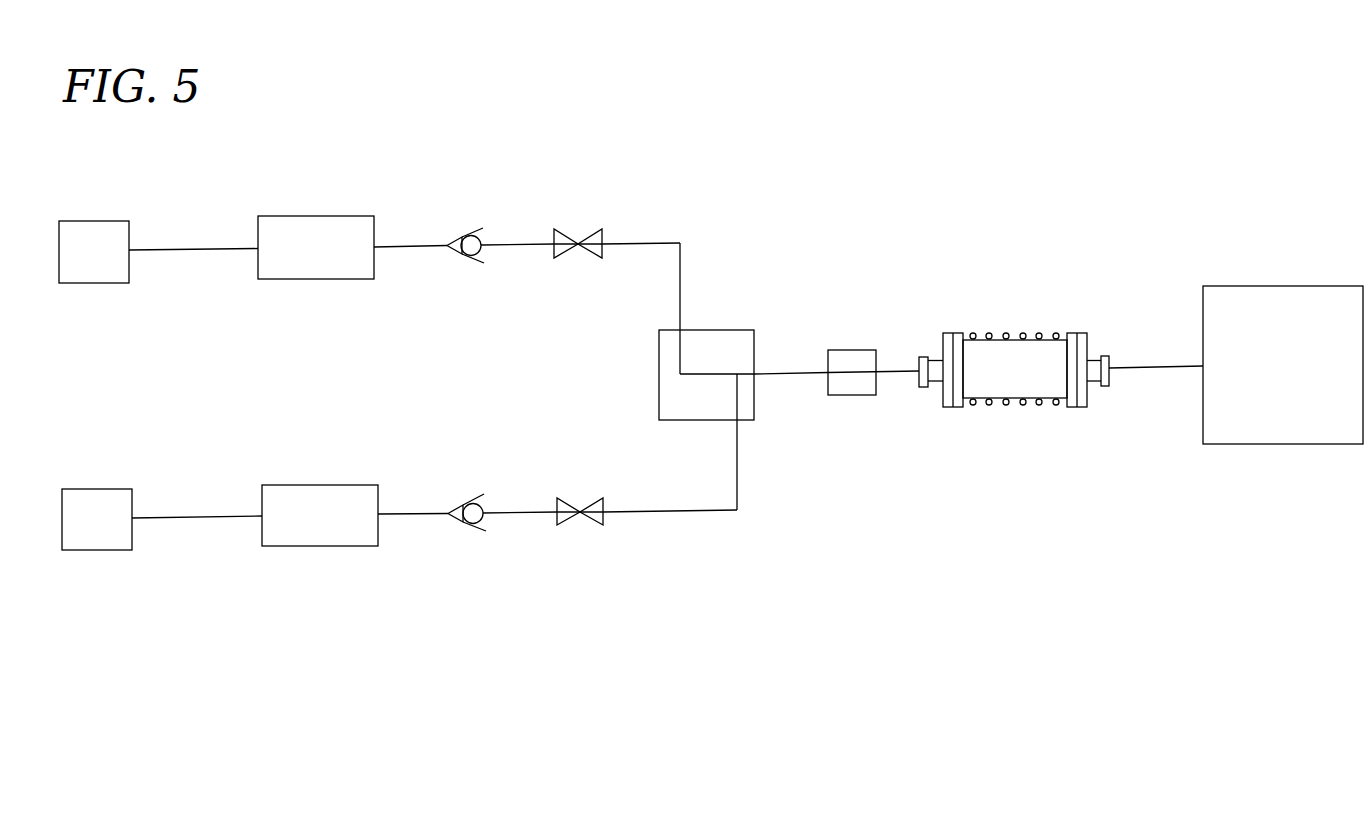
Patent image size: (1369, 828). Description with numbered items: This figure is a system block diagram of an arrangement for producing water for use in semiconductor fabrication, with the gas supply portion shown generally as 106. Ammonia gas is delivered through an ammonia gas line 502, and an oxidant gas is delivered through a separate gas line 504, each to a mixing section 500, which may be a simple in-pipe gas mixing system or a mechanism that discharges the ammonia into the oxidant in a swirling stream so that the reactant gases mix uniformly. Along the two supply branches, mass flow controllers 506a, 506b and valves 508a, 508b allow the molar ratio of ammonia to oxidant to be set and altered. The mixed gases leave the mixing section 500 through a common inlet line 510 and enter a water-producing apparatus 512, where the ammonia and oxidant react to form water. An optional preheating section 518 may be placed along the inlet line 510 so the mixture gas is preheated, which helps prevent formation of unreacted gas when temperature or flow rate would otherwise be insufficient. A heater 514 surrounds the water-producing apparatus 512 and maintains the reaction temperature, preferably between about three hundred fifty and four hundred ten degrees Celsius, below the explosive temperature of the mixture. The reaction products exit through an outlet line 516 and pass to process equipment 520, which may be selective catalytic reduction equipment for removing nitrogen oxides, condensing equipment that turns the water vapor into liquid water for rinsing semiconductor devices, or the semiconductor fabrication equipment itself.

The gas delivery system 106 is at (422, 332).
The mixing section 500 is at (706, 330).
The ammonia gas line 502 is at (93, 221).
The gas line 504 is at (98, 550).
The mass flow controller 506a is at (470, 234).
The mass flow controller 506b is at (470, 525).
The valve 508a is at (602, 229).
The valve 508b is at (603, 525).
The common inlet line 510 is at (785, 375).
The water-producing apparatus 512 is at (997, 350).
The heater 514 is at (990, 405).
The outlet line 516 is at (1138, 366).
The preheating section 518 is at (852, 350).
The process equipment 520 is at (1247, 444).